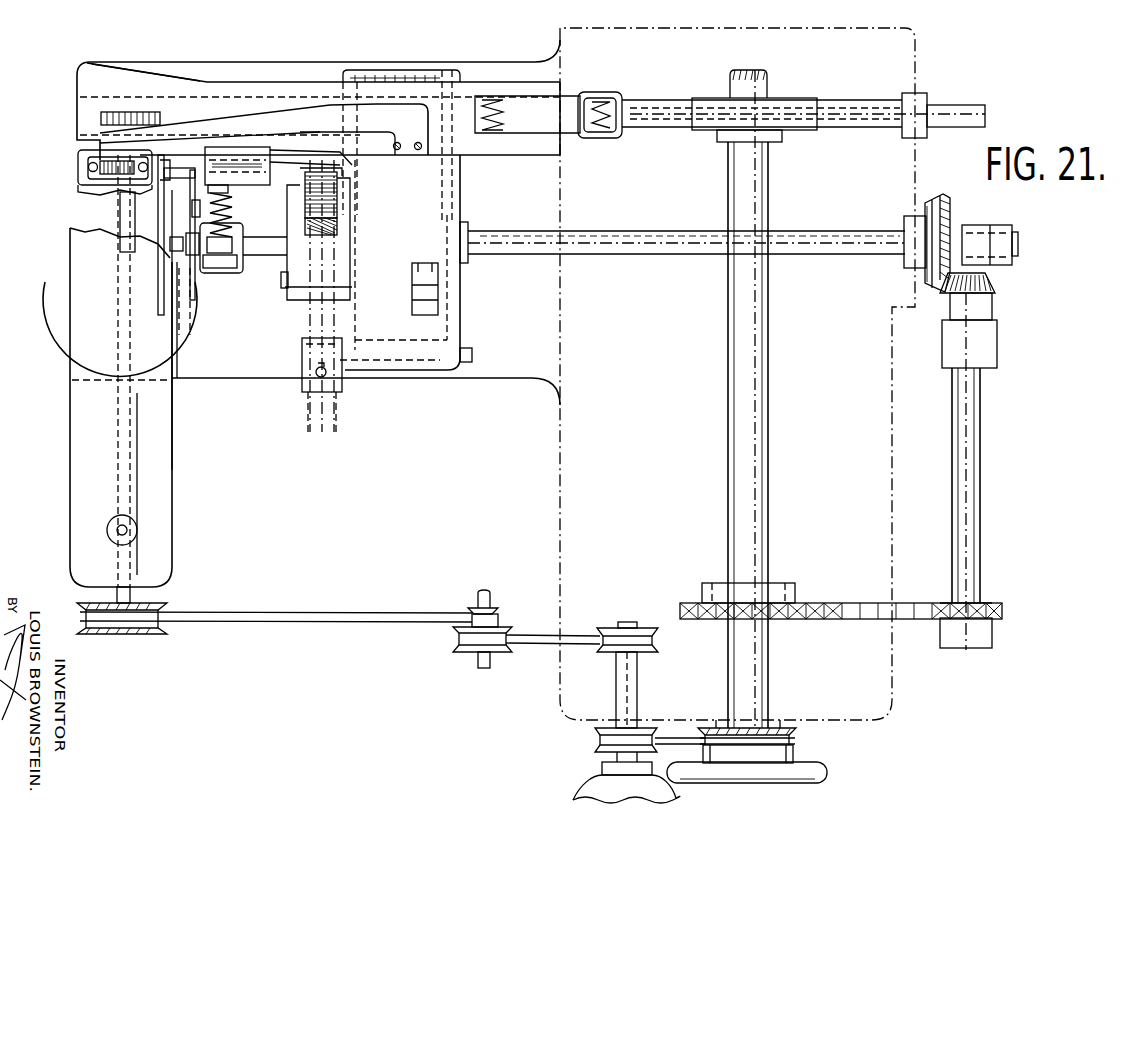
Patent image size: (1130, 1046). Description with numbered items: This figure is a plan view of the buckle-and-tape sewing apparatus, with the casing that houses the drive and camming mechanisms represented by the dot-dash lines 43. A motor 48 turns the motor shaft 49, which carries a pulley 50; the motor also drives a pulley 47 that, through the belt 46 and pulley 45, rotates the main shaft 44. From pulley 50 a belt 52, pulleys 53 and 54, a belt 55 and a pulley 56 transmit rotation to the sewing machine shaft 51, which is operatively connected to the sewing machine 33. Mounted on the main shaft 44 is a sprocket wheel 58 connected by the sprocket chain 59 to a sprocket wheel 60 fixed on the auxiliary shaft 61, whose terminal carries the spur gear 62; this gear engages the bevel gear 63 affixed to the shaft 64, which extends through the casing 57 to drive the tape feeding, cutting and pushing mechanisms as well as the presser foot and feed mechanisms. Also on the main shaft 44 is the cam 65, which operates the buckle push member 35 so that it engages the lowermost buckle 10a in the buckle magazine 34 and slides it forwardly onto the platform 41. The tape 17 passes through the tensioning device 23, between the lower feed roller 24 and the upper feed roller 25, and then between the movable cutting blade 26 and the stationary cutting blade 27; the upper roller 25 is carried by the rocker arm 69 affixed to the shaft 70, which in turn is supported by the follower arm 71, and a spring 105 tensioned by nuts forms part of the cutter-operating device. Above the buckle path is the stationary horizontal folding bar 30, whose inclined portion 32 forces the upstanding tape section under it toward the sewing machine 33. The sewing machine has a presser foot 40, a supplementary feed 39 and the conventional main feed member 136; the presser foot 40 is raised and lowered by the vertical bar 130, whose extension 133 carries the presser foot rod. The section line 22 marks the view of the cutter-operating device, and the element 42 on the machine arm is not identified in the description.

The lowermost buckle 10a is at (500, 128).
The tape 17 is at (332, 403).
The section line 22 is at (80, 47).
The tensioning device 23 is at (303, 363).
The feed roller 24 is at (340, 230).
The upper roller 25 is at (338, 200).
The cutting blade 26 is at (280, 172).
The cutting blade 27 is at (343, 165).
The folding bar 30 is at (315, 112).
The inclined portion 32 is at (236, 118).
The sewing machine 33 is at (68, 495).
The buckle magazine 34 is at (620, 137).
The buckle push member 35 is at (655, 124).
The supplementary feed 39 is at (118, 112).
The presser foot 40 is at (80, 157).
The platform 41 is at (310, 80).
The arm cover 42 is at (163, 78).
The dot-dash lines 43 is at (897, 682).
The main shaft 44 is at (736, 348).
The pulley 45 is at (795, 733).
The belt 46 is at (678, 740).
The pulley 47 is at (597, 744).
The motor 48 is at (590, 790).
The motor shaft 49 is at (623, 692).
The pulley 50 is at (608, 631).
The sewing machine shaft 51 is at (130, 598).
The belt 52 is at (548, 638).
The pulley 53 is at (503, 647).
The pulley 54 is at (493, 609).
The belt 55 is at (330, 614).
The pulley 56 is at (152, 632).
The casing 57 is at (458, 311).
The sprocket wheel 58 is at (693, 603).
The sprocket chain 59 is at (857, 602).
The sprocket wheel 60 is at (990, 603).
The auxiliary shaft 61 is at (982, 440).
The spur gear 62 is at (992, 287).
The bevel gear 63 is at (950, 208).
The shaft 64 is at (832, 238).
The cam 65 is at (798, 108).
The rocker arm 69 is at (287, 268).
The shaft 70 is at (282, 285).
The follower arm 71 is at (420, 288).
The spring 105 is at (230, 205).
The vertical bar 130 is at (171, 226).
The extension 133 is at (158, 203).
The main feed member 136 is at (85, 174).